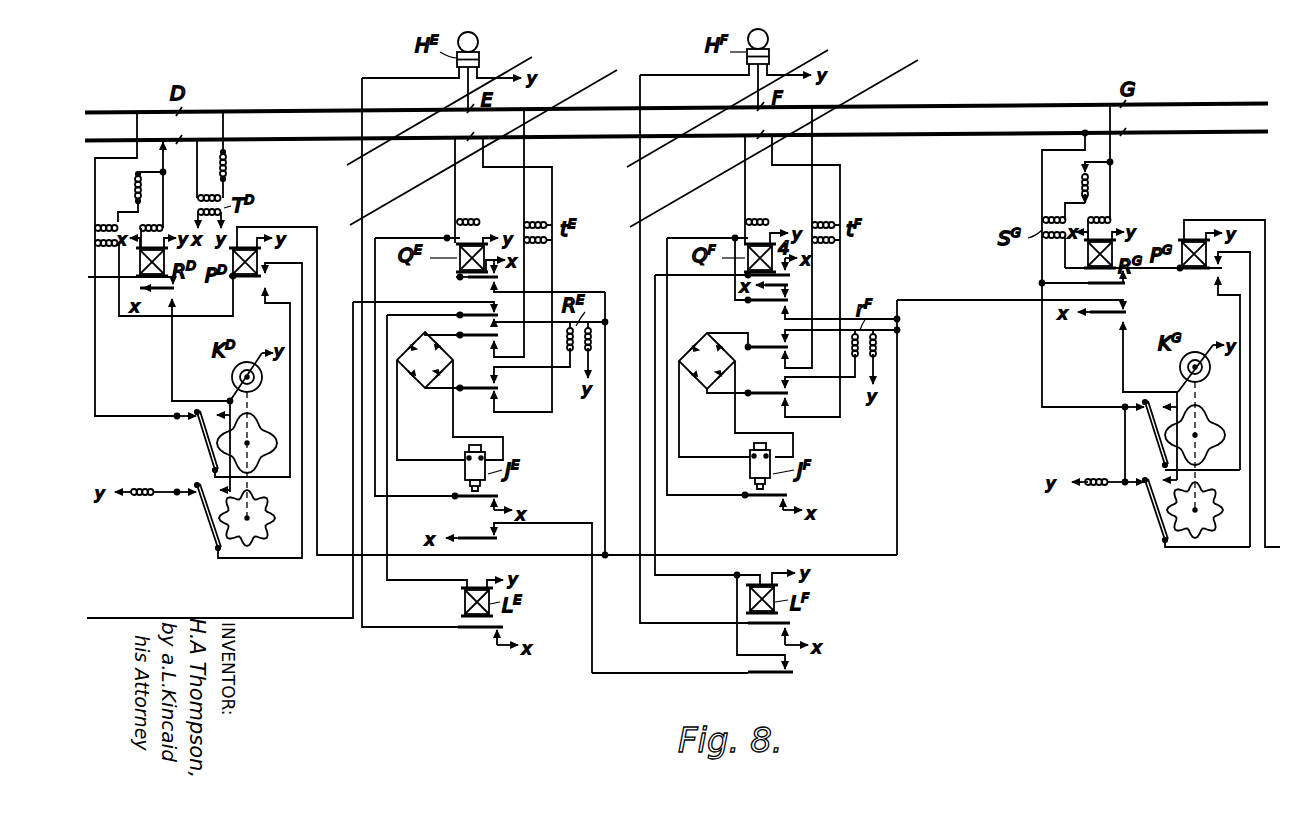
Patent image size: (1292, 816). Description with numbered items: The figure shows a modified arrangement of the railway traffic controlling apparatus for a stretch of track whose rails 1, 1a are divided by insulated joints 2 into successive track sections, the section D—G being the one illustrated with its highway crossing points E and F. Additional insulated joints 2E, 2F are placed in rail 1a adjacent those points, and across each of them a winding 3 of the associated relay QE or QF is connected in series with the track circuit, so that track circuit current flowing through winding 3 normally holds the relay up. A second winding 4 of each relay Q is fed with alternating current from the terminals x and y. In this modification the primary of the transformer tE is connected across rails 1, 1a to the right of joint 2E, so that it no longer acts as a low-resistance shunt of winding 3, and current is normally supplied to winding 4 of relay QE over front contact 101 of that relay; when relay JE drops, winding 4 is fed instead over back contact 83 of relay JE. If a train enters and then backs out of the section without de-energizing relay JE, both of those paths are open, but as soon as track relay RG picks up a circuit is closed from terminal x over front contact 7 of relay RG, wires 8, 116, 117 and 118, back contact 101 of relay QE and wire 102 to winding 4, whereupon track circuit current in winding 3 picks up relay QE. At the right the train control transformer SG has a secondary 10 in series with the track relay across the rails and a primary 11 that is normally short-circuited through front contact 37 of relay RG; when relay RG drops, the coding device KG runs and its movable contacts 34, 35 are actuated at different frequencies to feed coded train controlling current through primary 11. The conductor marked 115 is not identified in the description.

The track rail 1 is at (982, 106).
The track rail 1a is at (980, 136).
The insulated joint 2 is at (175, 139).
The insulated joint 2E is at (469, 138).
The insulated joint 2F is at (759, 137).
The winding of relay Q 3 is at (478, 222).
The second winding of relay Q 4 is at (447, 237).
The contact of track relay RG 7 is at (1112, 315).
The wire 8 is at (948, 300).
The secondary of transformer SG 10 is at (1060, 209).
The primary of transformer SG 11 is at (1054, 240).
The movable contact 34 is at (1156, 440).
The movable contact member 35 is at (1156, 516).
The front contact of relay RG 37 is at (1126, 284).
The back contact of relay JE 83 is at (483, 503).
The contact of relay QE 101 is at (483, 281).
The wire 102 is at (442, 278).
The conductor 115 is at (416, 240).
The wire 116 is at (897, 358).
The wire 117 is at (604, 436).
The wire 118 is at (603, 292).